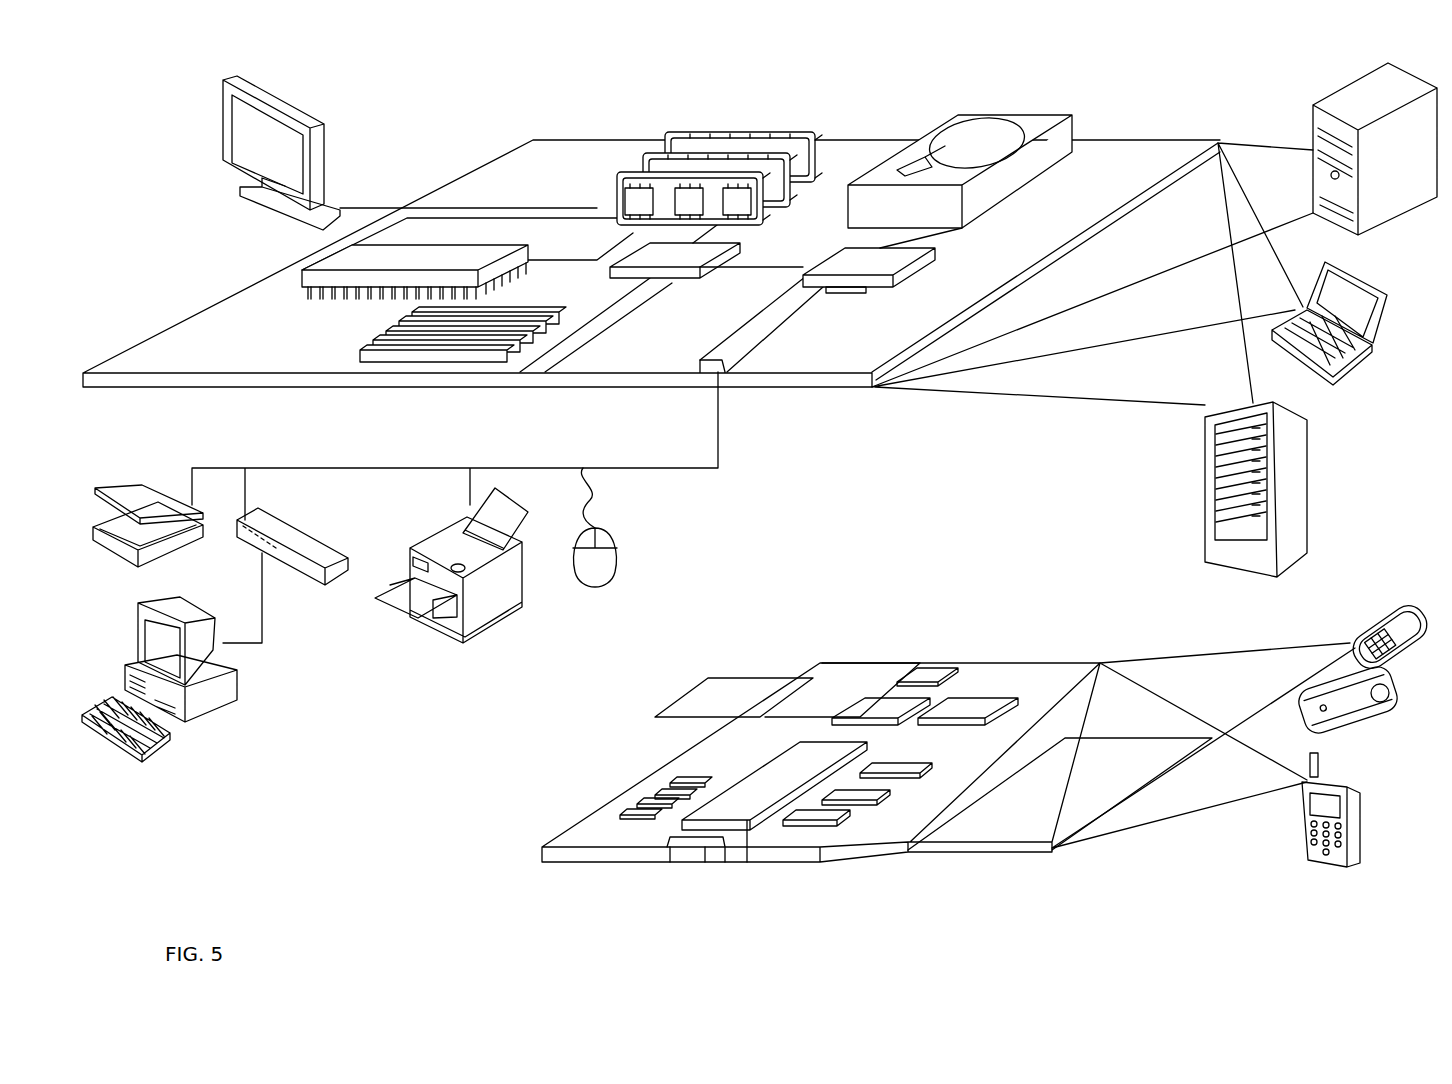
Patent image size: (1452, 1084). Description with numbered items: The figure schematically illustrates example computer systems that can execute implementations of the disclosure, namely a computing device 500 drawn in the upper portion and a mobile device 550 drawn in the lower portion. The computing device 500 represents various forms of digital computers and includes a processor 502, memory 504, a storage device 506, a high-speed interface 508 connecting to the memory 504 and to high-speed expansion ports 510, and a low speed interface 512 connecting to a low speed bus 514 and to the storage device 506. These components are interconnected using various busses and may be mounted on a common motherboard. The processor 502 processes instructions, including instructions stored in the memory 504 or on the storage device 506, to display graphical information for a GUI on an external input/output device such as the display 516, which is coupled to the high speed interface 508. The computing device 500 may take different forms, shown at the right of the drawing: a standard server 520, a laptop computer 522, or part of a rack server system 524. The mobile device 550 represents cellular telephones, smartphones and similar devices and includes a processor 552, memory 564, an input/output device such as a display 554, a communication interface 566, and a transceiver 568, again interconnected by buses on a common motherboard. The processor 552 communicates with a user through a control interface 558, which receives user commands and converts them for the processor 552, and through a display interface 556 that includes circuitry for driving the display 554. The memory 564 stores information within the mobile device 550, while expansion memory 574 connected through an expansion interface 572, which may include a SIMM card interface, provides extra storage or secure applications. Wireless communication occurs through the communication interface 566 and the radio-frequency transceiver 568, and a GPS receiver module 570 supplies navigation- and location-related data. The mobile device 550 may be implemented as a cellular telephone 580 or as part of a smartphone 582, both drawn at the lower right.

The computing device 500 is at (446, 106).
The processor 502 is at (302, 277).
The memory 504 is at (693, 100).
The storage device 506 is at (960, 115).
The high-speed interface 508 is at (647, 258).
The high-speed expansion ports 510 is at (380, 340).
The low speed interface 512 is at (846, 262).
The low speed bus 514 is at (727, 373).
The display 516 is at (228, 47).
The standard server 520 is at (1313, 93).
The laptop computer 522 is at (1380, 258).
The rack server system 524 is at (1208, 515).
The mobile device 550 is at (515, 857).
The processor 552 is at (702, 850).
The display 554 is at (1013, 830).
The display interface 556 is at (818, 838).
The control interface 558 is at (830, 793).
The memory 564 is at (650, 802).
The communication interface 566 is at (880, 708).
The transceiver 568 is at (968, 705).
The GPS receiver module 570 is at (950, 670).
The expansion interface 572 is at (797, 680).
The expansion memory 574 is at (717, 680).
The cellular telephone 580 is at (1362, 620).
The smartphone 582 is at (1305, 817).